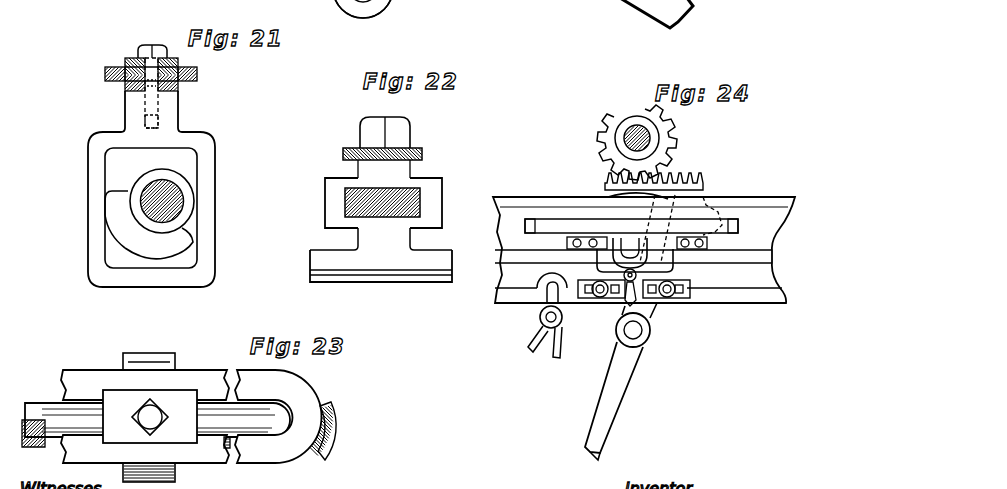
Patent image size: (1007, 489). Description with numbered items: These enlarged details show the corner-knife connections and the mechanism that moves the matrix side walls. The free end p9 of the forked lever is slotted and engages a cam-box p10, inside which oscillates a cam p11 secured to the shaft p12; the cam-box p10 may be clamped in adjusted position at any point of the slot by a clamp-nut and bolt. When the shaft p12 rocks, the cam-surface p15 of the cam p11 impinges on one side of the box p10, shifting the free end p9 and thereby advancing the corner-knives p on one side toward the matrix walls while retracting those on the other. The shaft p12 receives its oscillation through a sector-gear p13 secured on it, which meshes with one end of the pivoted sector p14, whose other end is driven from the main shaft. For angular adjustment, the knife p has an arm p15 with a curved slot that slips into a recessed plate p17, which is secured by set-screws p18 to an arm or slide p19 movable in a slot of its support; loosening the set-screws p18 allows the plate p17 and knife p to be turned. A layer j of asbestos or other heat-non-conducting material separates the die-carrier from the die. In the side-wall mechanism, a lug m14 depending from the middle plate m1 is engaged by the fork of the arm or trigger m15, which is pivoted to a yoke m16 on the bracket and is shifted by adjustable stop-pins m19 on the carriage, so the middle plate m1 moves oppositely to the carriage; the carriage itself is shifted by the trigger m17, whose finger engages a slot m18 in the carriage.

In FIG. 21, the free end of the lever p9 is at (105, 72).
In FIG. 23, the free end of the lever p9 is at (85, 375).
In FIG. 21, the cam-box p10 is at (165, 280).
In FIG. 23, the cam-box p10 is at (148, 353).
In FIG. 21, the cam p11 is at (118, 218).
In FIG. 21, the cam-surface / arm of the knife p15 is at (115, 233).
In FIG. 22, the cam-surface / arm of the knife p15 is at (352, 207).
In FIG. 21, the shaft p12 is at (175, 203).
In FIG. 23, the shaft p12 is at (333, 442).
In FIG. 24, the shaft p12 is at (628, 130).
In FIG. 22, the set-screws p18 is at (368, 133).
In FIG. 22, the arm or slide p19 is at (413, 150).
In FIG. 22, the recessed plate p17 is at (433, 187).
In FIG. 22, the corner-knife p is at (383, 278).
In FIG. 22, the layer of asbestos or heat-non-conducting material j is at (317, 272).
In FIG. 24, the sector-gear p13 is at (676, 143).
In FIG. 24, the pivoted sector p14 is at (690, 186).
In FIG. 24, the middle plate m1 is at (547, 227).
In FIG. 24, the lug m14 is at (627, 240).
In FIG. 24, the arm or trigger m15 is at (640, 300).
In FIG. 24, the yoke m16 is at (673, 270).
In FIG. 24, the trigger m17 is at (533, 342).
In FIG. 24, the slot in the carriage m18 is at (521, 305).
In FIG. 24, the adjustable stop-pins m19 is at (728, 320).